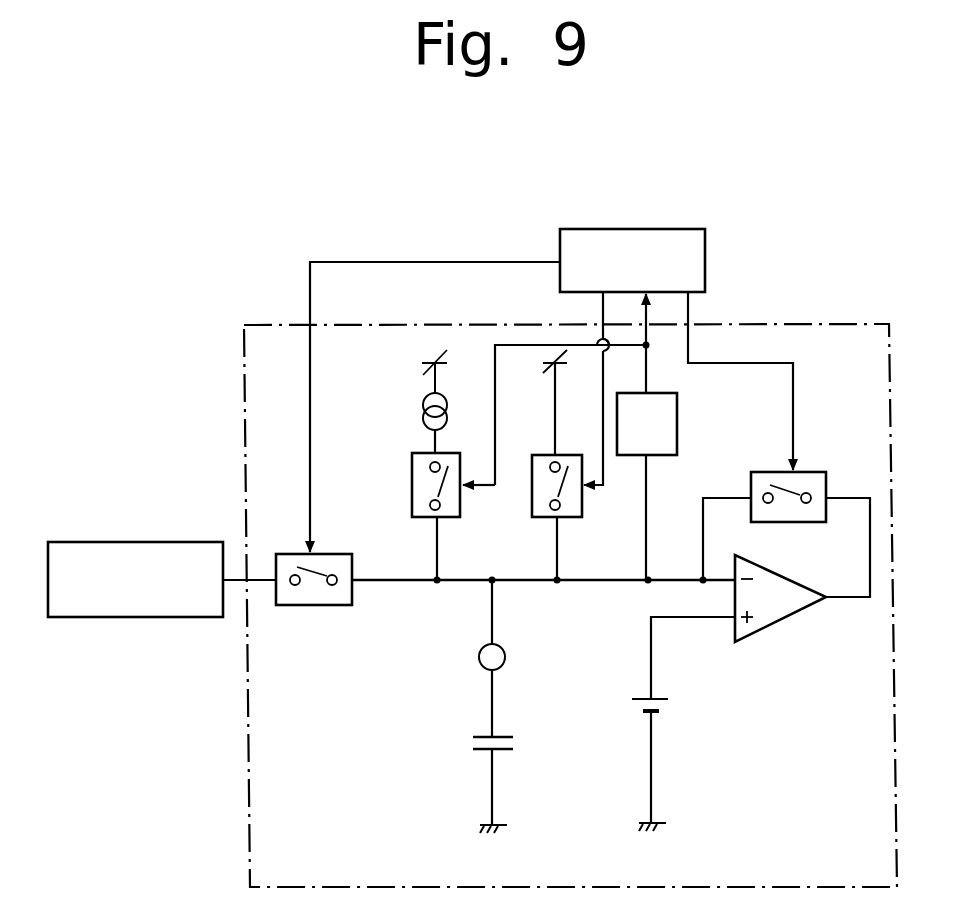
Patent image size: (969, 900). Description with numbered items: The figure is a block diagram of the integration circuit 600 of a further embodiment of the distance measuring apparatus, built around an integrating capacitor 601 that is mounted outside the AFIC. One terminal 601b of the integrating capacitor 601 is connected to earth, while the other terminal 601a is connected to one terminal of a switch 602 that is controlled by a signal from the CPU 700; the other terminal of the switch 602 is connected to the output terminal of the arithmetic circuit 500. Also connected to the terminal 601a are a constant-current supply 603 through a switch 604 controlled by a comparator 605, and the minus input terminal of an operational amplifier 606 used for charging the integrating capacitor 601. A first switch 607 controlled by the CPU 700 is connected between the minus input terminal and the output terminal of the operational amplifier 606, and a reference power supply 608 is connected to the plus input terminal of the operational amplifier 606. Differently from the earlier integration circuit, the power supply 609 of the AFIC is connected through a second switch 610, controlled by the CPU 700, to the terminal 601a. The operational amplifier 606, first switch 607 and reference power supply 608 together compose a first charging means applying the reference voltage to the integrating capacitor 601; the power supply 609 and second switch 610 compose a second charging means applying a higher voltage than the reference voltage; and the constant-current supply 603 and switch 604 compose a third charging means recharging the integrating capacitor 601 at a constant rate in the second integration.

The arithmetic circuit 500 is at (155, 542).
The integration circuit 600 is at (849, 320).
The CPU 700 is at (705, 253).
The integrating capacitor 601 is at (511, 732).
The other terminal of the integrating capacitor 601a is at (508, 735).
The one terminal of the integrating capacitor 601b is at (473, 755).
The switch 602 is at (325, 605).
The constant-current supply 603 is at (423, 404).
The switch 604 is at (412, 484).
The comparator 605 is at (677, 407).
The operational amplifier 606 is at (793, 617).
The first switch 607 is at (816, 472).
The reference power supply 608 is at (662, 712).
The power supply 609 is at (548, 380).
The second switch 610 is at (536, 502).